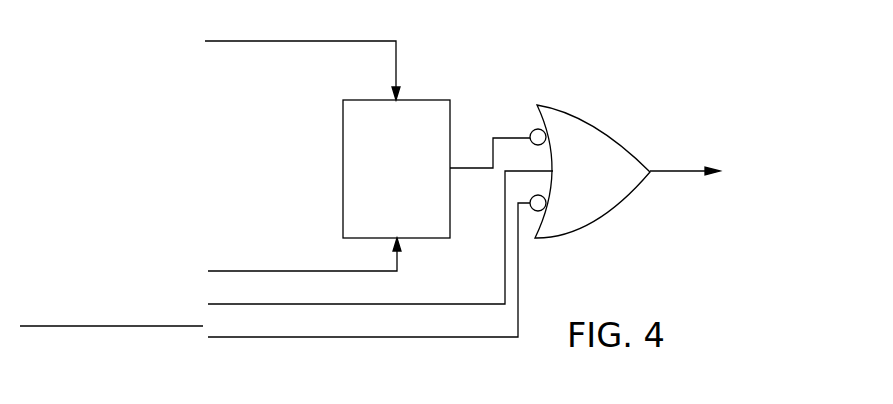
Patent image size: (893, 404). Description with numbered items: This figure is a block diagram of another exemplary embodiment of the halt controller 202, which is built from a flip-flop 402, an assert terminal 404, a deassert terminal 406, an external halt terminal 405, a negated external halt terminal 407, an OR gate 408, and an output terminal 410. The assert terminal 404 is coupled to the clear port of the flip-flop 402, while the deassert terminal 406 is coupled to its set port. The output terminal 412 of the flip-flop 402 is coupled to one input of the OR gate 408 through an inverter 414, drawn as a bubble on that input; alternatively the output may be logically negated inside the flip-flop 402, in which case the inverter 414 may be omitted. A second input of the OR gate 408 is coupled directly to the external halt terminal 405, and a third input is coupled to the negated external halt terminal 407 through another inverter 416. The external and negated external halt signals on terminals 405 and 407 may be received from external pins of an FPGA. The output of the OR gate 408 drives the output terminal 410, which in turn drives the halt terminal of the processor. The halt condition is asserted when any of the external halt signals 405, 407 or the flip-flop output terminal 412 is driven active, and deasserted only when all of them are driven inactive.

The halt controller 202 is at (741, 300).
The flip-flop 402 is at (425, 100).
The assert terminal 404 is at (283, 41).
The external halt terminal 405 is at (472, 304).
The deassert terminal 406 is at (305, 271).
The negated external halt terminal 407 is at (367, 337).
The OR gate 408 is at (620, 202).
The output terminal 410 is at (680, 172).
The output terminal of the flip-flop 412 is at (512, 138).
The inverter 414 is at (528, 128).
The inverter 416 is at (532, 213).